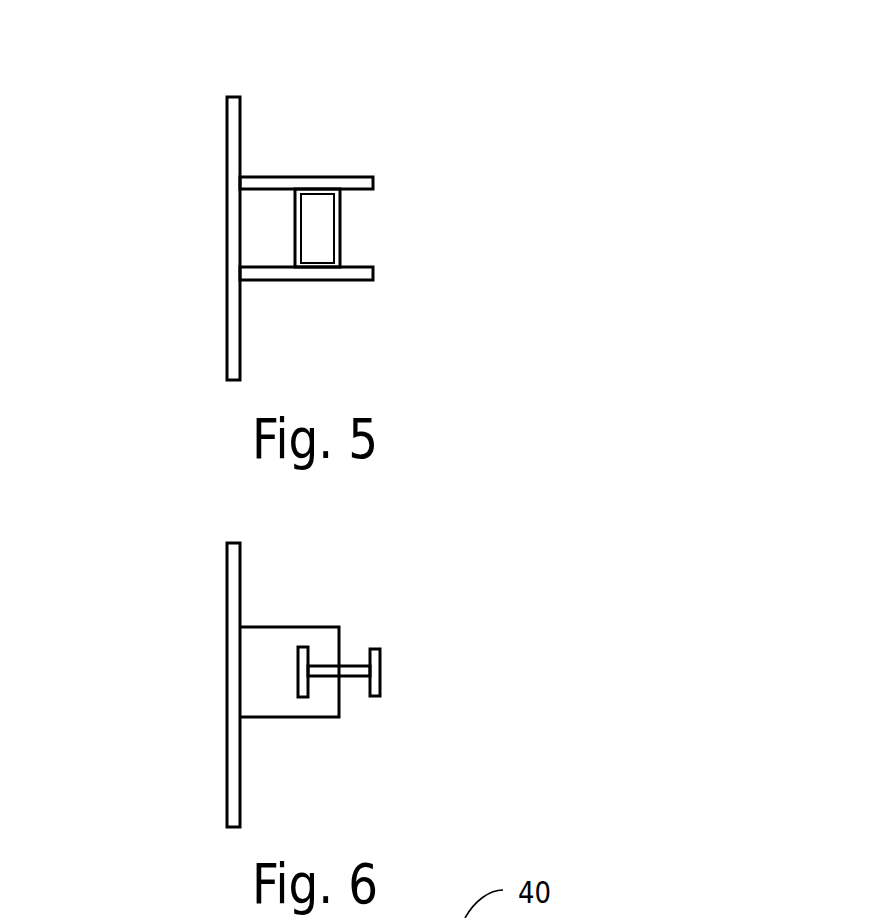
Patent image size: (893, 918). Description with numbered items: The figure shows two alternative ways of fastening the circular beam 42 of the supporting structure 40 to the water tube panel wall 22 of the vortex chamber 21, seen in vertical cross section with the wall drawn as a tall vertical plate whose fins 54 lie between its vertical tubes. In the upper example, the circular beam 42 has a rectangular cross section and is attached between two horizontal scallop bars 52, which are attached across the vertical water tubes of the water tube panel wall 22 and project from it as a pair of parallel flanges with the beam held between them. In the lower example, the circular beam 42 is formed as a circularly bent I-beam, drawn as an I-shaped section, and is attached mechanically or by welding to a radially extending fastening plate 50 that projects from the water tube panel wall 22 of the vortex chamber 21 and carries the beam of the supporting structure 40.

In FIG. 5, the vortex chamber 21 is at (183, 265).
In FIG. 6, the vortex chamber 21 is at (183, 712).
In FIG. 5, the water tube panel wall 22 is at (227, 125).
In FIG. 6, the water tube panel wall 22 is at (227, 572).
In FIG. 5, the supporting structure 40 is at (443, 74).
In FIG. 6, the supporting structure 40 is at (443, 521).
In FIG. 5, the circular beam 42 is at (340, 228).
In FIG. 6, the circular beam 42 is at (345, 670).
In FIG. 6, the fastening plate 50 is at (270, 640).
In FIG. 5, the horizontal scallop bars 52 is at (270, 183).
In FIG. 5, the fins 54 is at (233, 230).
In FIG. 6, the fins 54 is at (233, 677).